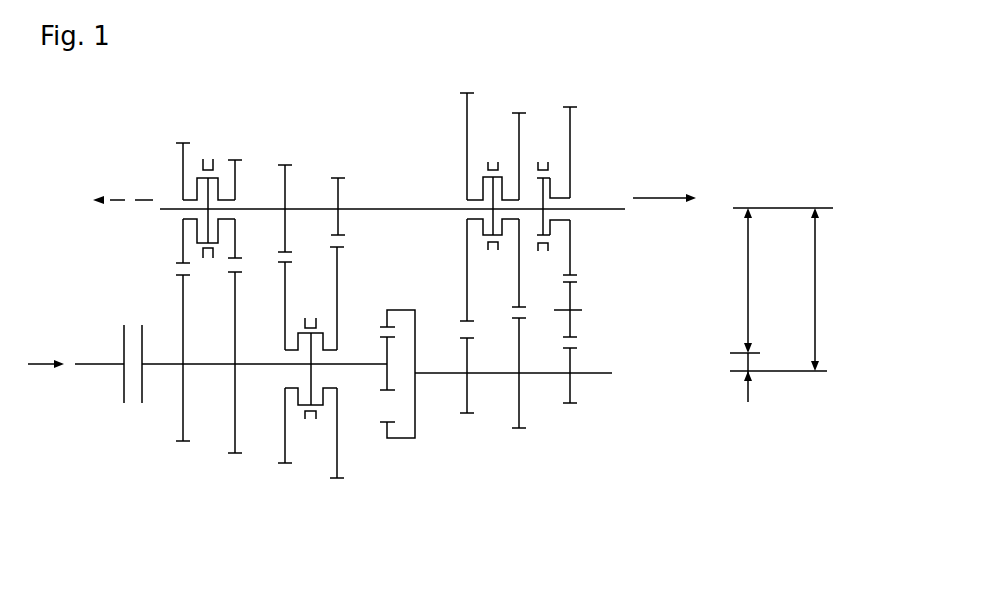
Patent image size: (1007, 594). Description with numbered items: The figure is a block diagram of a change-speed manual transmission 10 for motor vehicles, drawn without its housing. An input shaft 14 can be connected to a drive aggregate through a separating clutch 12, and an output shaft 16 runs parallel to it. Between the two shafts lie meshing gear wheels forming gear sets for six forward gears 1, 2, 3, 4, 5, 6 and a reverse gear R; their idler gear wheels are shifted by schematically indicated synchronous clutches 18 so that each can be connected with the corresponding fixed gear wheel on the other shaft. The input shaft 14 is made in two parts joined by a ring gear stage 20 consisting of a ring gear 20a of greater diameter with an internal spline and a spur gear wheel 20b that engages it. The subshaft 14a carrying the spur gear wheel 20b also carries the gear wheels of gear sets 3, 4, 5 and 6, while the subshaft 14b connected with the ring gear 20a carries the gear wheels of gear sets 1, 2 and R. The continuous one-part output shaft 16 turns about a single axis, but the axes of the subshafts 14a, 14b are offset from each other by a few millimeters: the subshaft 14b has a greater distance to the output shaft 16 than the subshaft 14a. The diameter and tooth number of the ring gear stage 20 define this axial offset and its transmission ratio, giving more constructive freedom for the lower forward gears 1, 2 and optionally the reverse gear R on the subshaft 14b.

The change-speed transmission 10 is at (606, 132).
The separating clutch 12 is at (121, 388).
The input shaft 14 is at (353, 318).
The subshaft 14a is at (163, 363).
The subshaft 14b is at (587, 372).
The output shaft 16 is at (403, 208).
The synchronous clutch 18 is at (208, 162).
The ring gear stage 20 is at (385, 406).
The ring gear 20a is at (396, 308).
The spur gear wheel 20b is at (385, 378).
The first forward gear 1 is at (473, 305).
The second forward gear 2 is at (523, 315).
The third forward gear 3 is at (183, 330).
The fourth forward gear 4 is at (233, 339).
The fifth forward gear 5 is at (287, 341).
The sixth forward gear 6 is at (336, 348).
The reverse gear R is at (571, 312).